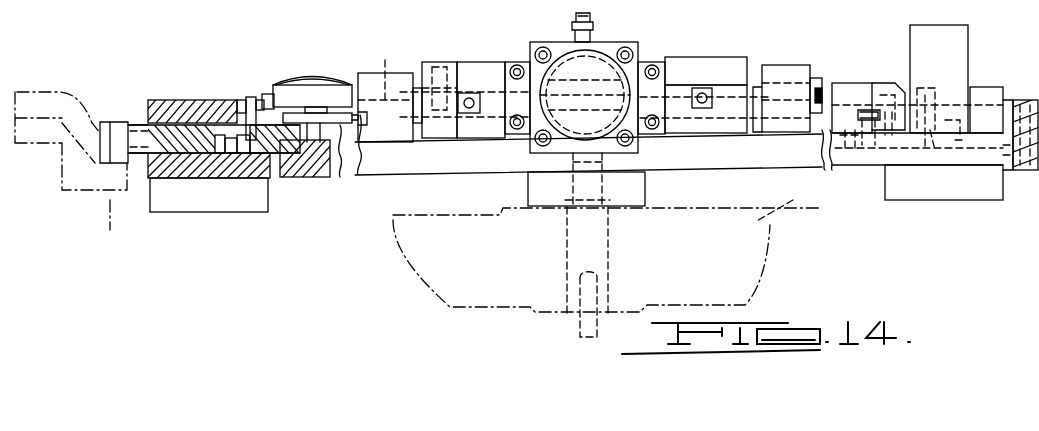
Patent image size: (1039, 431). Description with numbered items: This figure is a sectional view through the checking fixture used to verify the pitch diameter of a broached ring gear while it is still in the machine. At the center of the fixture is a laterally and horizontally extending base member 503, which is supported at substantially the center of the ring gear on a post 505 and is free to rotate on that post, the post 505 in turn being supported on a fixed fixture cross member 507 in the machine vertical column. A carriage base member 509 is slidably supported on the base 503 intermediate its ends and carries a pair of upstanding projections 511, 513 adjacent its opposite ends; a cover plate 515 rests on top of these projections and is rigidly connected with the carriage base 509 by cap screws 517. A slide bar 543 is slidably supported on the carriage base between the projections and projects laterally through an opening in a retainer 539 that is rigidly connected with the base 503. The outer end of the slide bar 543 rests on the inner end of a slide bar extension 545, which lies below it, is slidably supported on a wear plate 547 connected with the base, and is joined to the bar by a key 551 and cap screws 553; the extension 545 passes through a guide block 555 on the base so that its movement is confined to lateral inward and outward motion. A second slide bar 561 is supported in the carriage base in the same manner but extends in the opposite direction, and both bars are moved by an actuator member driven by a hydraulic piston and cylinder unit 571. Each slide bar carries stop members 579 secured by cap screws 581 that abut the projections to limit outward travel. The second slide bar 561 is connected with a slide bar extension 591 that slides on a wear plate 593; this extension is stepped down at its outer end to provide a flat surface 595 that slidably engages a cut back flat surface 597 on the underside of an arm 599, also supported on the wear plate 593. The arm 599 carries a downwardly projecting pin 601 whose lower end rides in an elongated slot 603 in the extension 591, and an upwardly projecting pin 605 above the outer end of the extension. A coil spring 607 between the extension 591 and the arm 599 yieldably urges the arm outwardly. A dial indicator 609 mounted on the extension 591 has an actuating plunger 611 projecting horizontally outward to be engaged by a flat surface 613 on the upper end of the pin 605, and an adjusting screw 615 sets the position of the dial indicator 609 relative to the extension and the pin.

The base member 503 is at (747, 157).
The post 505 is at (607, 238).
The fixture cross member 507 is at (793, 205).
The carriage base member 509 is at (810, 65).
The upstanding projection 511 is at (727, 95).
The upstanding projection 513 is at (450, 100).
The cover plate 515 is at (695, 60).
The cap screws 517 is at (432, 65).
The retainer 539 is at (842, 85).
The slide bar 543 is at (850, 88).
The slide bar extension 545 is at (943, 117).
The wear plate 547 is at (870, 138).
The key 551 is at (878, 90).
The cap screws 553 is at (900, 78).
The guide block 555 is at (982, 90).
The second slide bar 561 is at (389, 93).
The hydraulic piston and cylinder unit 571 is at (590, 83).
The stop members 579 is at (472, 97).
The cap screws 581 is at (467, 108).
The slide bar extension 591 is at (317, 176).
The wear plate 593 is at (243, 143).
The flat surface 595 is at (231, 143).
The cut back flat surface 597 is at (220, 143).
The arm 599 is at (165, 132).
The downwardly projecting pin 601 is at (225, 152).
The elongated slot 603 is at (215, 152).
The upwardly projecting pin 605 is at (247, 107).
The coil spring 607 is at (270, 175).
The dial indicator 609 is at (316, 74).
The actuating plunger 611 is at (264, 104).
The flat surface 613 is at (255, 100).
The adjusting screw 615 is at (370, 140).